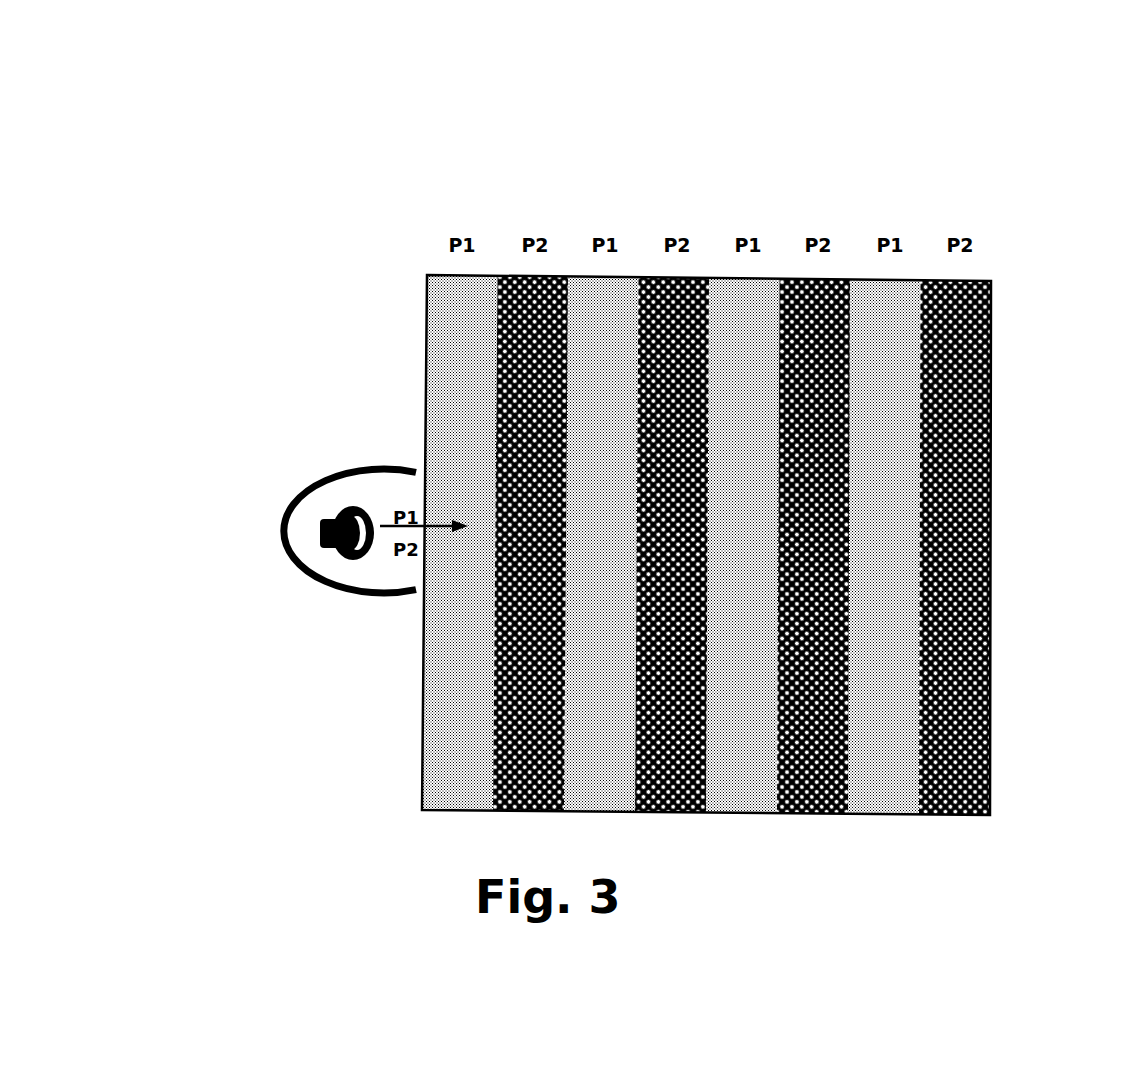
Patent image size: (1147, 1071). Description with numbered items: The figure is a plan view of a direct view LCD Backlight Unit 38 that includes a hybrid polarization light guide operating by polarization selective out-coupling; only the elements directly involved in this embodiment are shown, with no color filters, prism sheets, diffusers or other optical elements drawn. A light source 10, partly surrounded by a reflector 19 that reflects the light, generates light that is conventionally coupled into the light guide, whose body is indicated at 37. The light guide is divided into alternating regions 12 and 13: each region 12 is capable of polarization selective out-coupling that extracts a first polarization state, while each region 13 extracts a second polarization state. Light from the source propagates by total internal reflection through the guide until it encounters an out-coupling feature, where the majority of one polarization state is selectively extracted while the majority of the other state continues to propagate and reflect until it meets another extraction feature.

The light source 10 is at (333, 527).
The reflector 19 is at (288, 548).
The region 12 is at (671, 544).
The region 13 is at (742, 545).
The polarizing layer 37 is at (638, 219).
The direct view LCD Backlight Unit 38 is at (1045, 190).